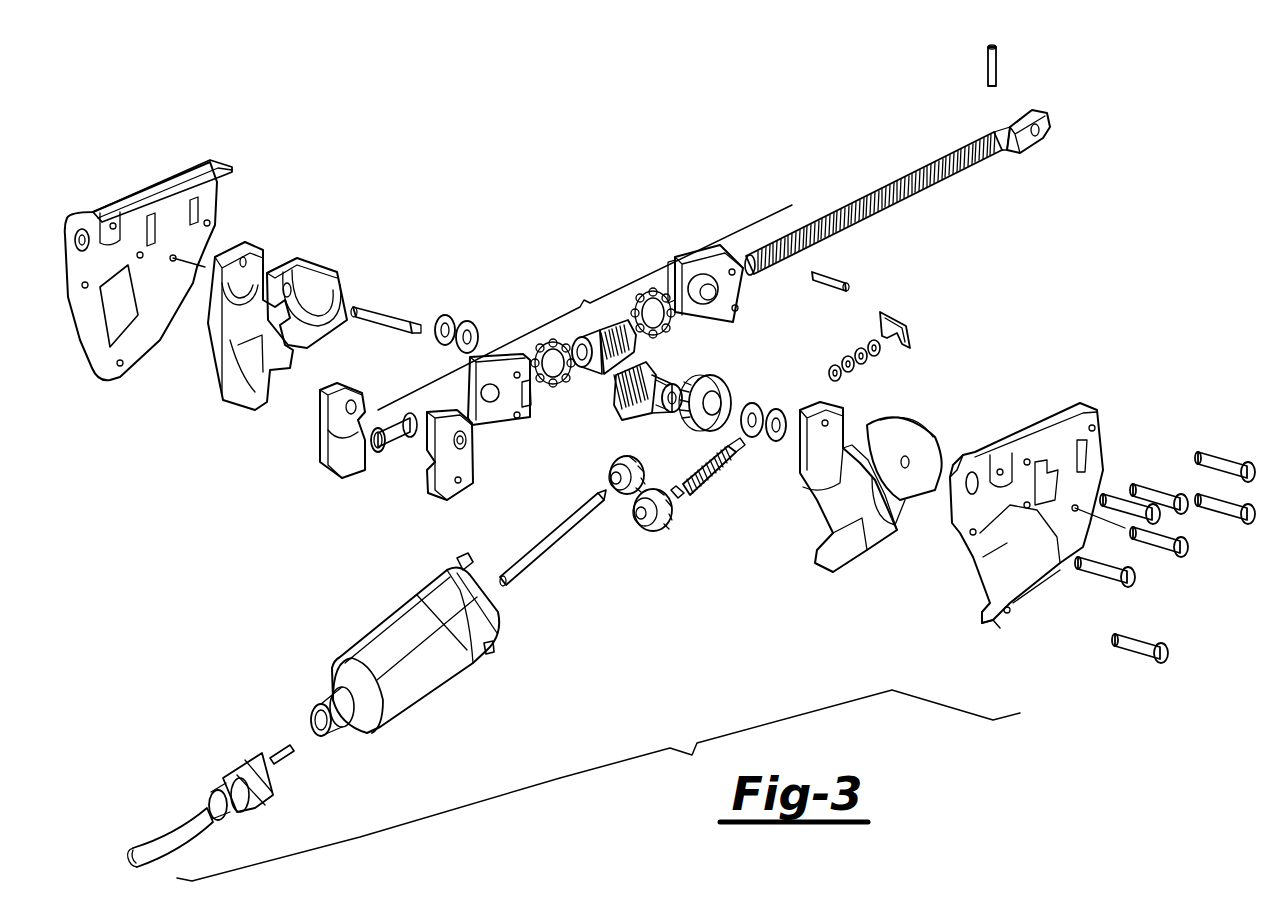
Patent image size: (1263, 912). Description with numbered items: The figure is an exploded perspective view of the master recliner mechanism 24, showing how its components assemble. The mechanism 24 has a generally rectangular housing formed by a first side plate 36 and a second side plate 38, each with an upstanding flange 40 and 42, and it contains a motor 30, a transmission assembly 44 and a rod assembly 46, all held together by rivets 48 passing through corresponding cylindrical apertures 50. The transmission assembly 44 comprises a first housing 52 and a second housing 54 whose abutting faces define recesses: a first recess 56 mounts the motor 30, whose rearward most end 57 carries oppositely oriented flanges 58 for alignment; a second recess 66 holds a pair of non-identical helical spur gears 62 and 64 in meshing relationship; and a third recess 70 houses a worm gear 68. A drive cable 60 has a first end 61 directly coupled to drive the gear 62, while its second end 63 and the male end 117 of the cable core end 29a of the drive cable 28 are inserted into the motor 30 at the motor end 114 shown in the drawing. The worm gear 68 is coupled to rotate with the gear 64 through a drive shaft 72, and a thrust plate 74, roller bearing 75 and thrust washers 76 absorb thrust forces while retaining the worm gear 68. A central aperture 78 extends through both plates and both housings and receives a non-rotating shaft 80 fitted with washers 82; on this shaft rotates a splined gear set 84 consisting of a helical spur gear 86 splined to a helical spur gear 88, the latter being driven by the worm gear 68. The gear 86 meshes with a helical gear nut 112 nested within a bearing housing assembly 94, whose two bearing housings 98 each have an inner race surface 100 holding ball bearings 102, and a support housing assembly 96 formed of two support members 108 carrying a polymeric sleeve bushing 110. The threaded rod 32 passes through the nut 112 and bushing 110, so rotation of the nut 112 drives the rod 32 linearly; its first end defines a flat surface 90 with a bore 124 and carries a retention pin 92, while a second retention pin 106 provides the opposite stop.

The master recliner mechanism 24 is at (667, 752).
The drive cable 28 is at (167, 833).
The cable core end 29a is at (282, 770).
The motor 30 is at (428, 677).
The threaded rod 32 is at (943, 187).
The first side plate 36 is at (207, 200).
The second side plate 38 is at (1098, 427).
The flange 40 is at (222, 168).
The flange 42 is at (1083, 407).
The transmission assembly 44 is at (762, 535).
The rod assembly 46 is at (638, 262).
The rivets 48 is at (1193, 503).
The cylindrical apertures 50 is at (1100, 433).
The first transmission housing 52 is at (343, 288).
The second transmission housing 54 is at (903, 438).
The first recess 56 is at (217, 365).
The rearward most end 57 is at (477, 570).
The flanges 58 is at (453, 563).
The drive cable 60 is at (557, 545).
The first end 61 is at (607, 497).
The helical spur gear 62 is at (610, 460).
The second end 63 is at (508, 583).
The helical spur gear 64 is at (677, 515).
The second recess 66 is at (293, 347).
The worm gear 68 is at (717, 475).
The third recess 70 is at (320, 283).
The drive shaft 72 is at (675, 490).
The thrust plate 74 is at (897, 313).
The roller bearing 75 is at (853, 368).
The thrust washers 76 is at (850, 352).
The central aperture 78 is at (910, 462).
The shaft 80 is at (397, 312).
The washers 82 is at (447, 315).
The splined gear set 84 is at (682, 373).
The helical spur gear 86 is at (632, 403).
The helical spur gear 88 is at (715, 377).
The flat surface 90 is at (1045, 133).
The retention pin 92 is at (998, 72).
The bearing housing assembly 94 is at (712, 237).
The support housing assembly 96 is at (363, 463).
The bearing housings 98 is at (522, 417).
The inner race surface 100 is at (738, 313).
The ball bearings 102 is at (543, 345).
The retention pin 106 is at (843, 280).
The support members 108 is at (318, 447).
The sleeve bushing 110 is at (403, 457).
The helical gear nut 112 is at (597, 363).
The motor shaft boss 114 is at (348, 730).
The male end 117 is at (292, 746).
The bore 124 is at (1045, 127).